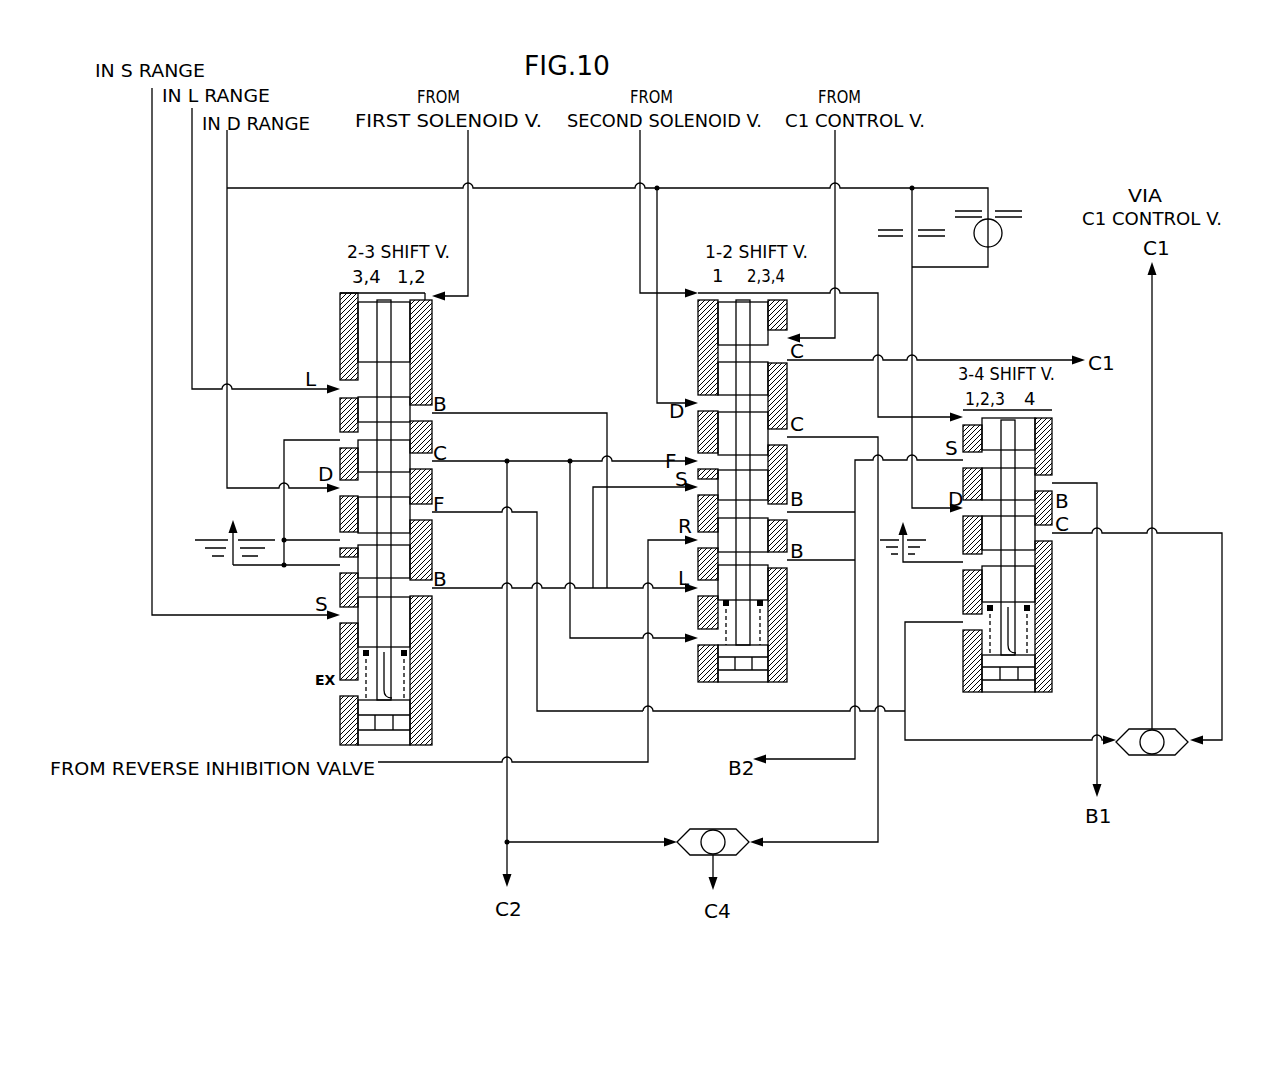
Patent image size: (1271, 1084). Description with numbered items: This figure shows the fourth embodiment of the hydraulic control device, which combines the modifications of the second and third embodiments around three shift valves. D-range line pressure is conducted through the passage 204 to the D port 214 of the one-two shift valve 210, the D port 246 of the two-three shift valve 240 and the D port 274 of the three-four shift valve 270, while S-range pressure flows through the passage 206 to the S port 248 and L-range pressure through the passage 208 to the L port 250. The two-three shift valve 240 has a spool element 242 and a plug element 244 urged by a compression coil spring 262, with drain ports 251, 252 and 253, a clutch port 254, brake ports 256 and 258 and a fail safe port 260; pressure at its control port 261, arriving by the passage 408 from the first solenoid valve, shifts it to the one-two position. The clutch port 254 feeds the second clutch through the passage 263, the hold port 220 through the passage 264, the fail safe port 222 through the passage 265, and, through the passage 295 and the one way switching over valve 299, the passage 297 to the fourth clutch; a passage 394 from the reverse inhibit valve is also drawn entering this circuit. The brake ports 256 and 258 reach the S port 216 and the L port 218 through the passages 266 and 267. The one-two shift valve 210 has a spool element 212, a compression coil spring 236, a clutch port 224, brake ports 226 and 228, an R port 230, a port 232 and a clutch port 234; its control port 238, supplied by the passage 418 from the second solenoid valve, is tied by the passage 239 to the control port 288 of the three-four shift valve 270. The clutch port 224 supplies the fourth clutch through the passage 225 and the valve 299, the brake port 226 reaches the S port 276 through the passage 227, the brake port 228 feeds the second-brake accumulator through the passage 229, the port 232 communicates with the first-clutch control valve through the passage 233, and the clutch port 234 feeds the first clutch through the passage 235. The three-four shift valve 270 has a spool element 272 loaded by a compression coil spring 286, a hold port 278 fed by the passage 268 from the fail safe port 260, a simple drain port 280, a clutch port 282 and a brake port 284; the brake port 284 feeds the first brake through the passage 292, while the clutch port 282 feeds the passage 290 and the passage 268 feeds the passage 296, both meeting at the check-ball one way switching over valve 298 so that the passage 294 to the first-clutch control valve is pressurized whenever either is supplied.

The passage 204 is at (228, 172).
The passage 206 is at (152, 248).
The passage 208 is at (192, 240).
The first solenoid valve passage 408 is at (469, 166).
The second solenoid valve passage 418 is at (641, 162).
The passage 233 is at (836, 152).
The control port 238 is at (702, 291).
The passage 239 is at (879, 305).
The passage 235 is at (1020, 360).
The port 232 is at (780, 330).
The clutch port 234 is at (785, 376).
The spool element 212 is at (780, 400).
The clutch port 224 is at (788, 447).
The passage 227 is at (848, 494).
The brake port 226 is at (785, 522).
The brake port 228 is at (785, 570).
The compression coil spring 236 is at (780, 640).
The 1-2 shift valve 210 is at (742, 491).
The D port 214 is at (698, 412).
The fail safe port 222 is at (698, 469).
The S port 216 is at (700, 499).
The R port 230 is at (700, 544).
The L port 218 is at (700, 600).
The hold port 220 is at (700, 648).
The passage 265 is at (657, 460).
The passage 267 is at (573, 411).
The passage 266 is at (592, 592).
The passage 264 is at (600, 668).
The passage 268 is at (775, 714).
The passage 263 is at (509, 737).
The reverse inhibition oil passage 394 is at (590, 764).
The passage 295 is at (588, 845).
The one way switching over valve 299 is at (724, 829).
The passage 297 is at (714, 862).
The passage 229 is at (808, 762).
The passage 225 is at (879, 782).
The 2-3 shift valve 240 is at (368, 519).
The spool element 242 is at (412, 550).
The plug element 244 is at (421, 354).
The D port 246 is at (340, 502).
The S port 248 is at (340, 625).
The L port 250 is at (340, 380).
The drain port 251 is at (340, 571).
The drain port 252 is at (340, 434).
The drain port 253 is at (340, 544).
The clutch port 254 is at (425, 478).
The brake port 256 is at (425, 598).
The brake port 258 is at (425, 428).
The fail safe port 260 is at (425, 526).
The control port 261 is at (423, 306).
The compression coil spring 262 is at (425, 655).
The 3-4 shift valve 270 is at (1012, 563).
The spool element 272 is at (1040, 450).
The D port 274 is at (964, 522).
The S port 276 is at (964, 476).
The hold port 278 is at (964, 635).
The drain port 280 is at (964, 575).
The clutch port 282 is at (1044, 548).
The brake port 284 is at (1045, 478).
The compression coil spring 286 is at (1030, 612).
The control port 288 is at (966, 415).
The passage 290 is at (1223, 625).
The passage 292 is at (1098, 660).
The passage 294 is at (1153, 372).
The passage 296 is at (1010, 742).
The one way switching over valve 298 is at (1166, 729).